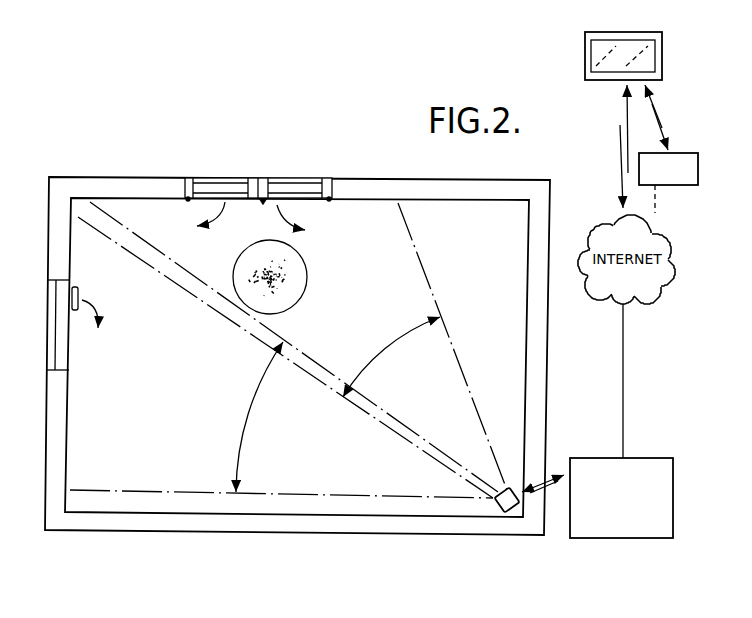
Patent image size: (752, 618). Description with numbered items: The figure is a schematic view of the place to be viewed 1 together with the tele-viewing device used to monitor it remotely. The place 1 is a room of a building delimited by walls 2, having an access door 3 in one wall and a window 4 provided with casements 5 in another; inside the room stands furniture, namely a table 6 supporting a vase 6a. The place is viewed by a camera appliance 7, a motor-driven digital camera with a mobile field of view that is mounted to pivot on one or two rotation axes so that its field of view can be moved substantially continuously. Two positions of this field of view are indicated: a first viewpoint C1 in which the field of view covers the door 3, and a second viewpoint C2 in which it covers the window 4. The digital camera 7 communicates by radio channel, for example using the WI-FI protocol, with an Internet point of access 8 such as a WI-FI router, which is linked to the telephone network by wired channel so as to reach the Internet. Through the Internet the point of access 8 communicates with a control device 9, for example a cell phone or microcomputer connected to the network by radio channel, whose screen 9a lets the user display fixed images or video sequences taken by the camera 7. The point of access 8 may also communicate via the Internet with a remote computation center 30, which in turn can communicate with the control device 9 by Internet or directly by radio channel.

The place to be viewed 1 is at (155, 435).
The walls 2 is at (56, 227).
The access door 3 is at (62, 348).
The window 4 is at (297, 176).
The casements 5 is at (283, 190).
The table 6 is at (247, 273).
The vase 6a is at (262, 266).
The camera appliance 7 is at (506, 510).
The Internet point of access 8 is at (596, 457).
The control device 9 is at (598, 80).
The screen 9a is at (628, 50).
The remote computation center 30 is at (685, 185).
The first viewpoint C1 is at (288, 350).
The second viewpoint C2 is at (425, 346).